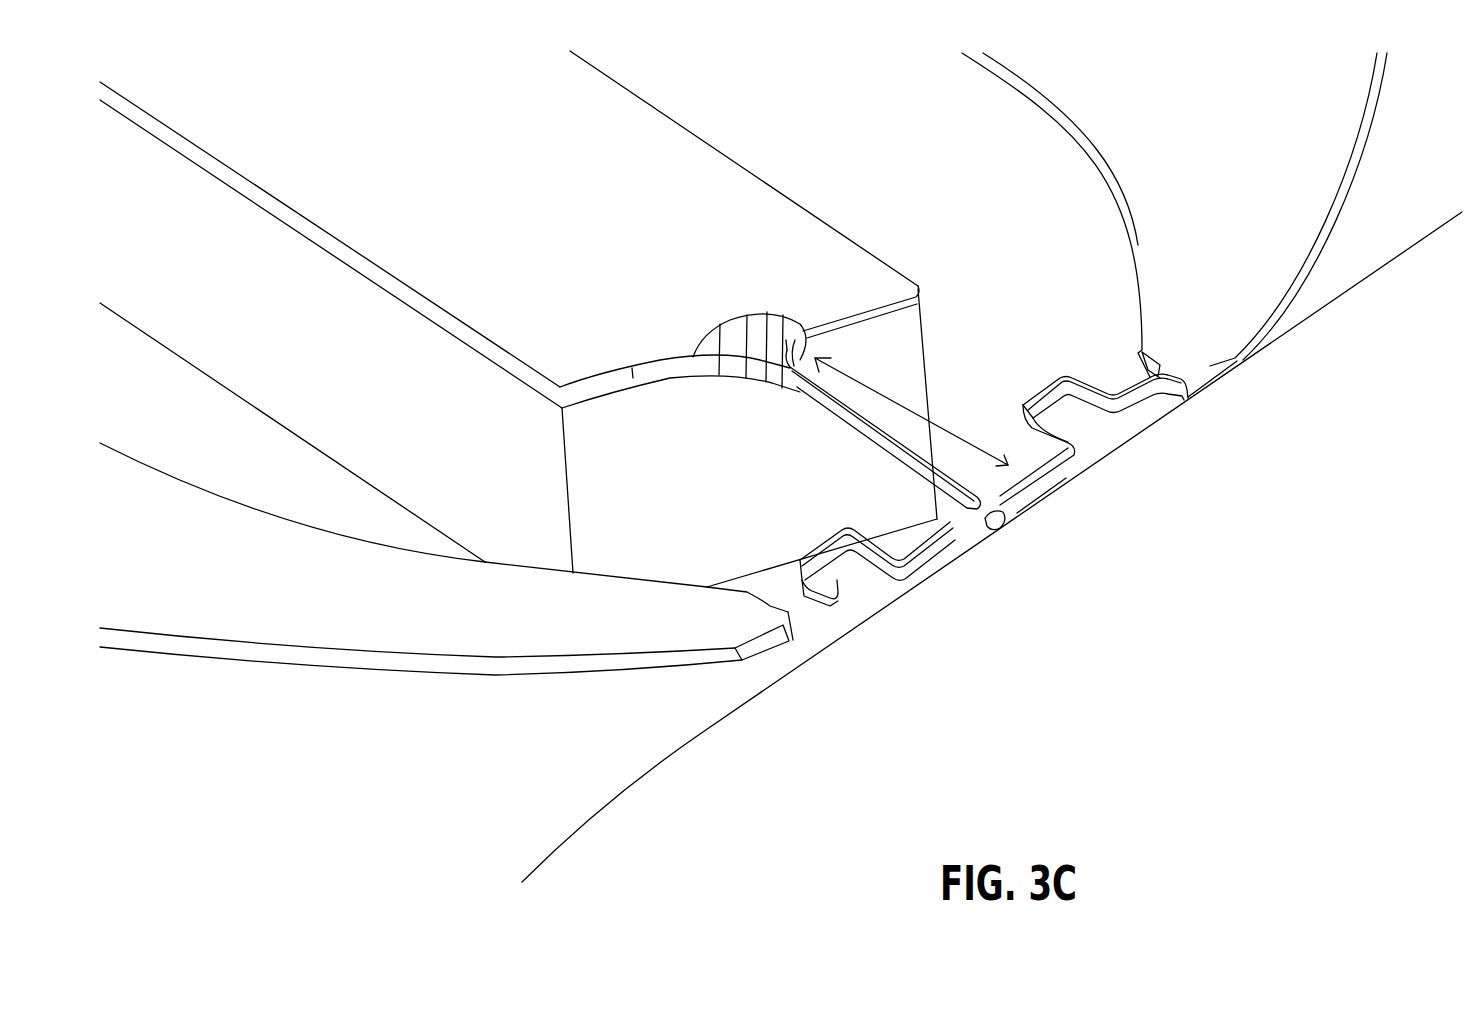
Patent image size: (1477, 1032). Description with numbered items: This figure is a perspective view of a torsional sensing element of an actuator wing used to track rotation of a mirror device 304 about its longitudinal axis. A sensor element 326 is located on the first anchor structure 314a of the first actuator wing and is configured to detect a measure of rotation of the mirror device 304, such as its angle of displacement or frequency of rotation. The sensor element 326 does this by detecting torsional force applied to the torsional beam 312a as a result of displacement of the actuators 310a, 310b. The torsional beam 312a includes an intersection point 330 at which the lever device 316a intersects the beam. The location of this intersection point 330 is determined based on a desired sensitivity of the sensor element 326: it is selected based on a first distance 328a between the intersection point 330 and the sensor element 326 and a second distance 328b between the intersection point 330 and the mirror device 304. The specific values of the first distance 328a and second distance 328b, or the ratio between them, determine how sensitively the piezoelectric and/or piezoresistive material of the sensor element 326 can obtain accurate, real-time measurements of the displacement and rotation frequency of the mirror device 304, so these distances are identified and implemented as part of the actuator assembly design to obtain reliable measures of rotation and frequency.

The mirror device 304 is at (1147, 589).
The actuator 310a is at (1222, 192).
The actuator 310b is at (360, 609).
The torsional beam 312a is at (862, 435).
The first anchor structure 314a is at (545, 192).
The lever device 316a is at (1042, 371).
The sensor element 326 is at (757, 312).
The first distance 328a is at (905, 375).
The second distance 328b is at (1050, 470).
The intersection point 330 is at (993, 533).